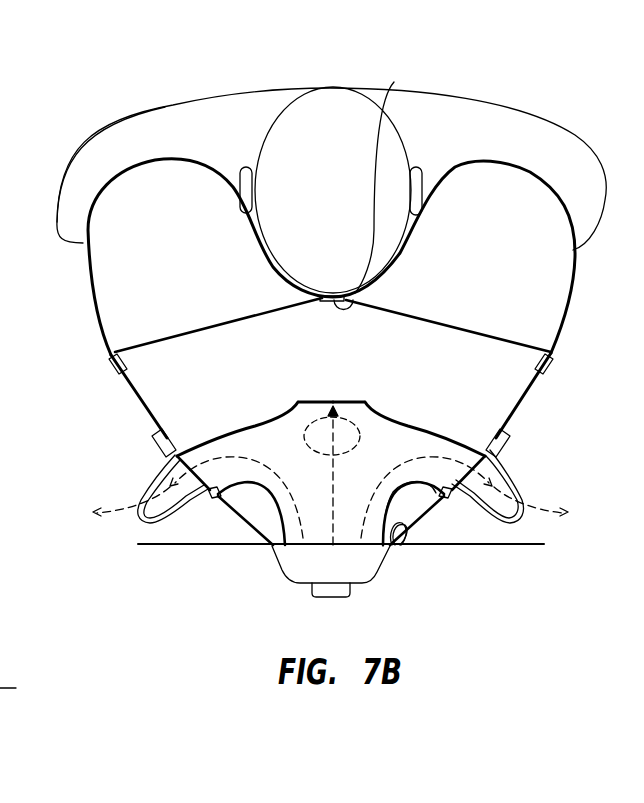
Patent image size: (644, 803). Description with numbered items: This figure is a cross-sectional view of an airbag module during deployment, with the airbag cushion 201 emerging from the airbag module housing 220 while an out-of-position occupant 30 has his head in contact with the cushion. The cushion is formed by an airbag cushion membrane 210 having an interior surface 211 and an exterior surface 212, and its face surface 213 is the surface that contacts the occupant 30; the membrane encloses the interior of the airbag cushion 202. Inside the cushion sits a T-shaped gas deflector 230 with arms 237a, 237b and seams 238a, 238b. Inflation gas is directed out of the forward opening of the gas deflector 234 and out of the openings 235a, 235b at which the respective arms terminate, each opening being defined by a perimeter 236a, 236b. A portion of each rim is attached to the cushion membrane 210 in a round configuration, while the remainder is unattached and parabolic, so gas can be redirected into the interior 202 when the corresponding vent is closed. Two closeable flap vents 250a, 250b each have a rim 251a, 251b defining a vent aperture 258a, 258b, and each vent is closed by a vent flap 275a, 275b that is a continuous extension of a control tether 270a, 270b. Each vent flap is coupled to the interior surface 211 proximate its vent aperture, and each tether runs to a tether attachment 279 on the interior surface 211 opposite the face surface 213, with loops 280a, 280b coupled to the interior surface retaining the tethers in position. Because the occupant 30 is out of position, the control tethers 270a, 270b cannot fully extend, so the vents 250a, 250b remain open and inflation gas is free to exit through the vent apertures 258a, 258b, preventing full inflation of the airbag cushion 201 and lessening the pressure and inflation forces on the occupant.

The airbag cushion 201 is at (88, 340).
The interior of the airbag cushion 202 is at (158, 274).
The airbag cushion membrane 210 is at (85, 272).
The interior surface of airbag cushion membrane 211 is at (395, 549).
The exterior surface of the airbag cushion membrane 212 is at (83, 260).
The face surface 213 is at (218, 162).
The airbag module housing 220 is at (318, 579).
The gas deflector 230 is at (250, 490).
The forward opening of gas deflector 234 is at (345, 417).
The opening 235a is at (462, 465).
The opening 235b is at (200, 468).
The perimeter of opening 236a is at (480, 450).
The perimeter of opening 236b is at (186, 452).
The arm 237a is at (443, 482).
The arm 237b is at (225, 484).
The seam 238a is at (367, 403).
The seam 238b is at (297, 403).
The closeable flap vent 250a is at (569, 637).
The closeable flap vent 250b is at (35, 535).
The rim of vent aperture 251a is at (450, 498).
The rim of vent aperture 251b is at (205, 496).
The vent aperture 258a is at (487, 503).
The vent aperture 258b is at (213, 497).
The control tether 270a is at (466, 320).
The control tether 270b is at (236, 318).
The vent flap 275a is at (517, 525).
The vent flap 275b is at (144, 518).
The tether attachment 279 is at (372, 183).
The loop 280a is at (510, 443).
The loop 280b is at (155, 443).
The occupant 30 is at (346, 188).